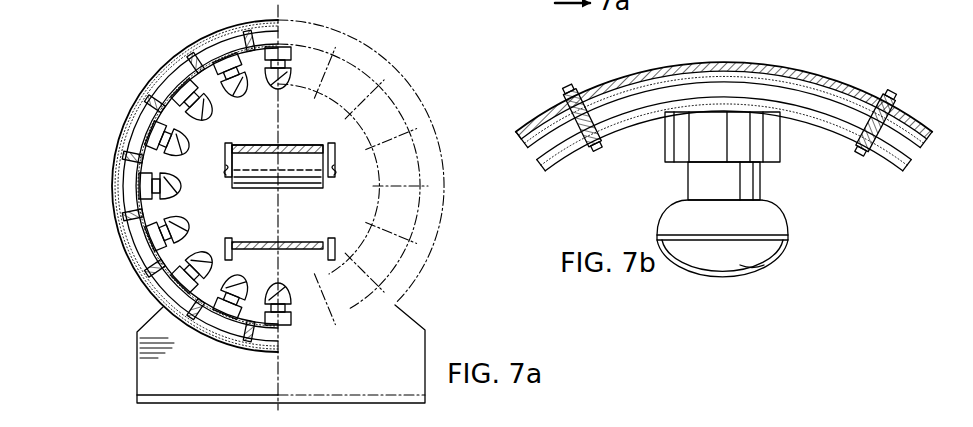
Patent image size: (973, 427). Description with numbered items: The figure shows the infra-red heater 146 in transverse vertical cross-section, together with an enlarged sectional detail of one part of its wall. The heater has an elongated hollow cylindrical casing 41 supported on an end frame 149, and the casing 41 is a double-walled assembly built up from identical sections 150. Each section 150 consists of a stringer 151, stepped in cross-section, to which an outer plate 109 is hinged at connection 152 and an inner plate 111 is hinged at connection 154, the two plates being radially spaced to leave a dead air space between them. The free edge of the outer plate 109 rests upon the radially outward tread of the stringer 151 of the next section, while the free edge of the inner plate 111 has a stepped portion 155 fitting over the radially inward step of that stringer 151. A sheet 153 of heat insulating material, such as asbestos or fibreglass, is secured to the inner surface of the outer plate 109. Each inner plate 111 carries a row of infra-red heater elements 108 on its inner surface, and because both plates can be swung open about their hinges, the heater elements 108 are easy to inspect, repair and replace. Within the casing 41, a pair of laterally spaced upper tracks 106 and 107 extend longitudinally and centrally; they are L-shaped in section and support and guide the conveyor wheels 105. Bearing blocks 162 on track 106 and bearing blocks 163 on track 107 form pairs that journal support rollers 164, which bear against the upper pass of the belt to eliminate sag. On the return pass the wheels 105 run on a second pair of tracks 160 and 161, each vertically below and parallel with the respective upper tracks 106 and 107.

In FIG. 7A, the infra-red heater 146 is at (123, 62).
In FIG. 7A, the section 150 is at (112, 185).
In FIG. 7B, the section 150 is at (819, 71).
In FIG. 7A, the sheet of heat insulating material 153 is at (212, 47).
In FIG. 7B, the sheet of heat insulating material 153 is at (683, 68).
In FIG. 7A, the outer plate 109 is at (192, 62).
In FIG. 7B, the outer plate 109 is at (753, 68).
In FIG. 7A, the inner plate 111 is at (284, 42).
In FIG. 7B, the inner plate 111 is at (800, 126).
In FIG. 7A, the infra-red heater element 108 is at (213, 103).
In FIG. 7B, the infra-red heater element 108 is at (770, 259).
In FIG. 7A, the conveyor wheel 105 is at (337, 140).
In FIG. 7A, the upper track 107 is at (225, 163).
In FIG. 7A, the bearing block 163 is at (226, 183).
In FIG. 7A, the support roller 164 is at (260, 172).
In FIG. 7A, the upper track 106 is at (333, 166).
In FIG. 7A, the bearing block 162 is at (333, 181).
In FIG. 7A, the lower track 161 is at (232, 258).
In FIG. 7A, the lower track 160 is at (328, 256).
In FIG. 7A, the end frame 149 is at (137, 332).
In FIG. 7B, the connection 152 is at (587, 90).
In FIG. 7B, the stringer 151 is at (888, 104).
In FIG. 7B, the connection 154 is at (608, 140).
In FIG. 7B, the stepped portion 155 is at (862, 150).
In FIG. 7B, the casing 41 is at (526, 158).